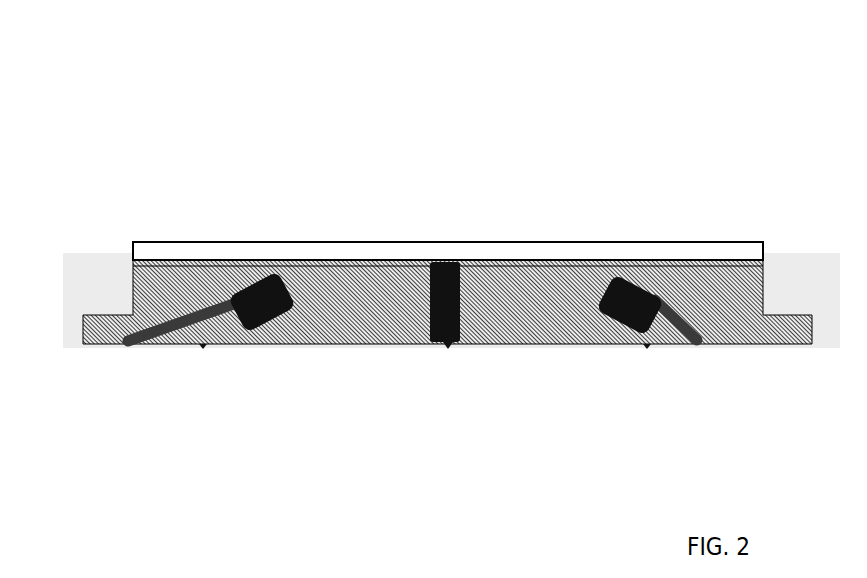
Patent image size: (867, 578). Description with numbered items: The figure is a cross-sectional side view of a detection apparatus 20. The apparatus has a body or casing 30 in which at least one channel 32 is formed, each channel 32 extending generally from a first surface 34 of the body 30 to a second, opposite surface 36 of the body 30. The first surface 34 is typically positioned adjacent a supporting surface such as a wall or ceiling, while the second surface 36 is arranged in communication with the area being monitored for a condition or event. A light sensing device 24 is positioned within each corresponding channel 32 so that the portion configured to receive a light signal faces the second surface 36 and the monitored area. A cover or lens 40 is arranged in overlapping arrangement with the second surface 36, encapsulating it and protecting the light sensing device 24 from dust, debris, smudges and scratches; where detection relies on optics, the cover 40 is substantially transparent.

The detection apparatus 20 is at (102, 93).
The light sensing device 24 is at (263, 273).
The body 30 is at (365, 322).
The channel 32 is at (318, 265).
The first surface 34 is at (524, 341).
The second surface 36 is at (501, 255).
The cover 40 is at (398, 252).